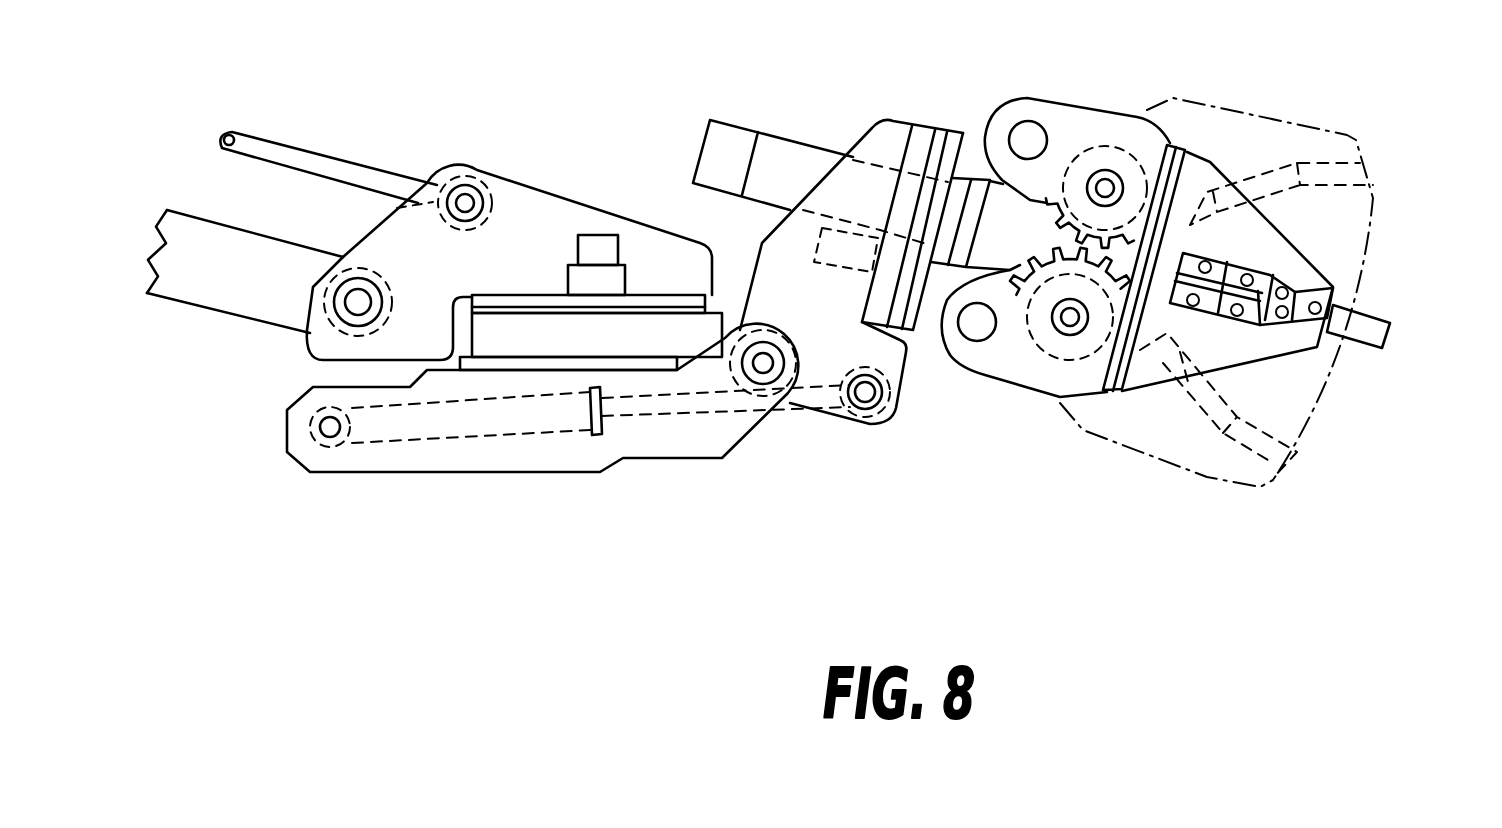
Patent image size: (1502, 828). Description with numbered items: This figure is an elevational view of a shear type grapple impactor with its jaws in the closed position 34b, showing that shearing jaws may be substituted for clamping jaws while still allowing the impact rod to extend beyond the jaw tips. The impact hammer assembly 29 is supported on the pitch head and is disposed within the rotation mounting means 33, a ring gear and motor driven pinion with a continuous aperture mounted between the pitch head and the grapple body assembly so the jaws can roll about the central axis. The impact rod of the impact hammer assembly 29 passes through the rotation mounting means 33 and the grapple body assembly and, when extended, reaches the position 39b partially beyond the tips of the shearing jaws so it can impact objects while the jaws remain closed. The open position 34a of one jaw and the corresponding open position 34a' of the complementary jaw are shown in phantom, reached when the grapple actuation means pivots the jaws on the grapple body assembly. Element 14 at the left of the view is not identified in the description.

The handle 14 is at (199, 282).
The impact hammer assembly 29 is at (782, 145).
The rotation mounting means 33 is at (895, 122).
The open position of the jaws 34a is at (1260, 260).
The closed position of the jaws 34b is at (1288, 249).
The extended position of the impact rod 39b is at (1383, 337).
The jaw (open position, phantom) 34a' is at (1179, 453).